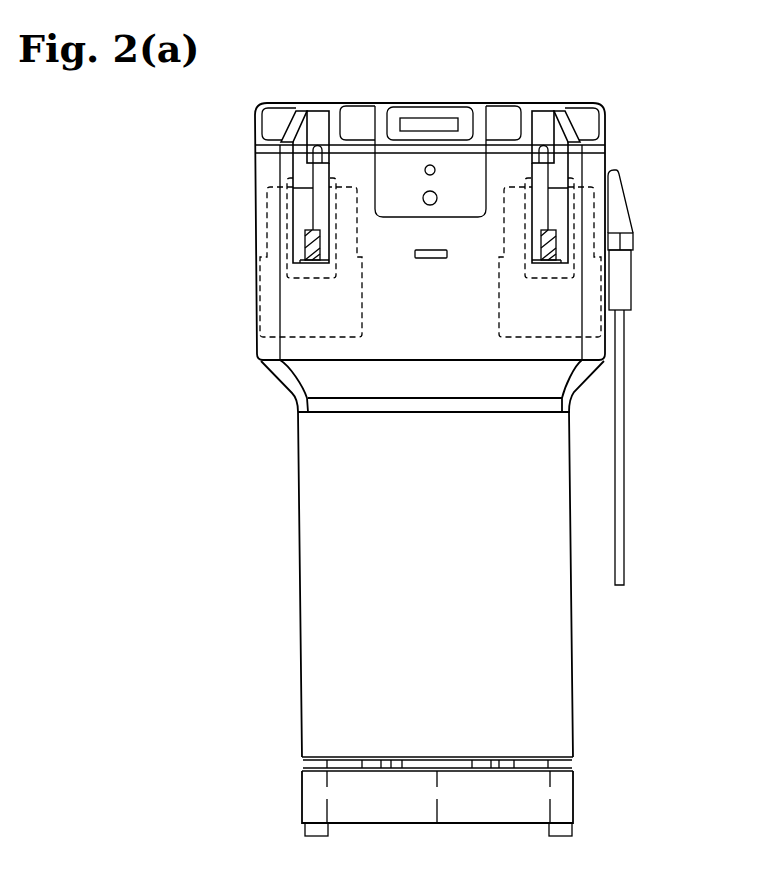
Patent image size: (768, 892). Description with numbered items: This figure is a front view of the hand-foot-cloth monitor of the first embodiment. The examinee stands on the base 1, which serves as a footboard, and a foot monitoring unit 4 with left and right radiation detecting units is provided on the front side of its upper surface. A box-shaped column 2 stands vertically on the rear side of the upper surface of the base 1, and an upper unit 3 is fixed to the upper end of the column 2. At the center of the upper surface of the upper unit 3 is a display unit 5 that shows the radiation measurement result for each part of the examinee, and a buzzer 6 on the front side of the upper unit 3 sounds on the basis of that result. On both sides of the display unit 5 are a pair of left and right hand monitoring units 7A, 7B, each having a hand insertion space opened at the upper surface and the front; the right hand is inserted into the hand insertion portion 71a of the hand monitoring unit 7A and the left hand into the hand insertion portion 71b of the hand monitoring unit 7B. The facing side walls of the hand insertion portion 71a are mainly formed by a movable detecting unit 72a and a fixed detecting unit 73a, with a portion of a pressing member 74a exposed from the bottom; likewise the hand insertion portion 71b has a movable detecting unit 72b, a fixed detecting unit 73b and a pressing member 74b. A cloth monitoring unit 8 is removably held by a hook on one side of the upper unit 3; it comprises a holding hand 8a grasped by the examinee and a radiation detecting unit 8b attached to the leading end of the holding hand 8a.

The base 1 is at (310, 796).
The column 2 is at (327, 658).
The upper unit 3 is at (238, 150).
The foot monitoring unit 4 is at (565, 767).
The display unit 5 is at (431, 128).
The buzzer 6 is at (432, 260).
The hand monitoring unit 7A is at (631, 214).
The hand monitoring unit 7B is at (255, 172).
The hand insertion portion 71a is at (545, 130).
The hand insertion portion 71b is at (317, 130).
The movable detecting unit 72a is at (518, 315).
The movable detecting unit 72b is at (354, 315).
The fixed detecting unit 73a is at (592, 310).
The fixed detecting unit 73b is at (282, 310).
The pressing member 74a is at (561, 258).
The pressing member 74b is at (306, 248).
The cloth monitoring unit 8 is at (659, 359).
The holding hand 8a is at (630, 283).
The radiation detecting unit 8b is at (611, 236).